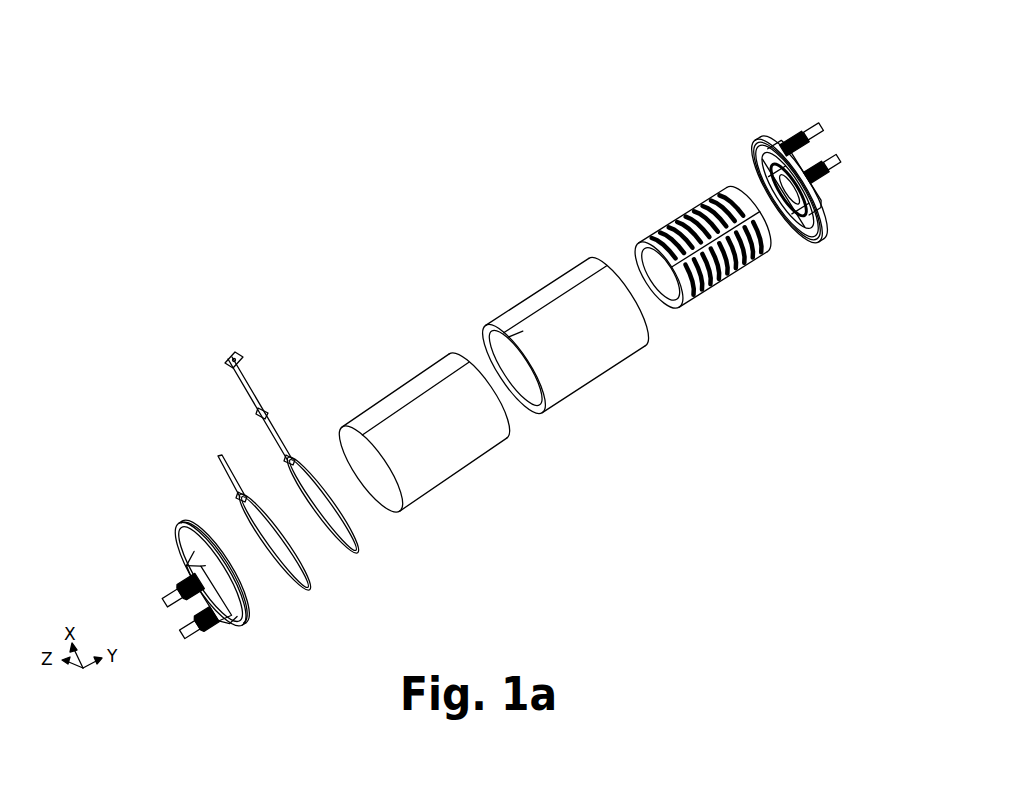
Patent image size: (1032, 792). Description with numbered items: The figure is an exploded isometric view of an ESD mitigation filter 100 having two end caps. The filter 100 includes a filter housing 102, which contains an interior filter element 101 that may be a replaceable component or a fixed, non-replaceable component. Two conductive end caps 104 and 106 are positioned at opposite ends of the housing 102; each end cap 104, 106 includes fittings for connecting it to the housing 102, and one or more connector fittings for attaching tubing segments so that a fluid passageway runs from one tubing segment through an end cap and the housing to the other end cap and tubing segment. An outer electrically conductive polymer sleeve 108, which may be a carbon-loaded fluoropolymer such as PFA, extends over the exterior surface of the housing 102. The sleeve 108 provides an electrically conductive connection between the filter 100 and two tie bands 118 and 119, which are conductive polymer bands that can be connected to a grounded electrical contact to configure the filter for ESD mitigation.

The filter 100 is at (397, 72).
The interior filter element 101 is at (680, 222).
The filter housing 102 is at (601, 383).
The conductive end cap 104 is at (822, 214).
The conductive end cap 106 is at (232, 622).
The electrically conductive polymer sleeve 108 is at (453, 482).
The tie band 118 is at (240, 368).
The tie band 119 is at (222, 470).